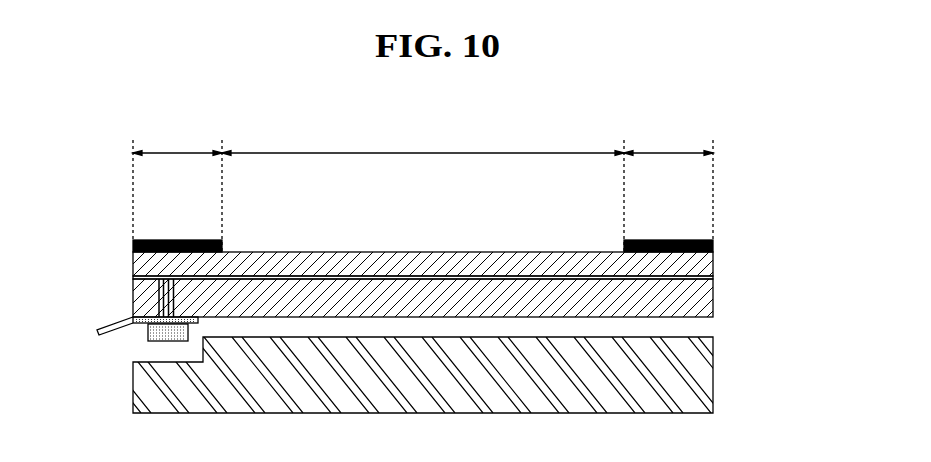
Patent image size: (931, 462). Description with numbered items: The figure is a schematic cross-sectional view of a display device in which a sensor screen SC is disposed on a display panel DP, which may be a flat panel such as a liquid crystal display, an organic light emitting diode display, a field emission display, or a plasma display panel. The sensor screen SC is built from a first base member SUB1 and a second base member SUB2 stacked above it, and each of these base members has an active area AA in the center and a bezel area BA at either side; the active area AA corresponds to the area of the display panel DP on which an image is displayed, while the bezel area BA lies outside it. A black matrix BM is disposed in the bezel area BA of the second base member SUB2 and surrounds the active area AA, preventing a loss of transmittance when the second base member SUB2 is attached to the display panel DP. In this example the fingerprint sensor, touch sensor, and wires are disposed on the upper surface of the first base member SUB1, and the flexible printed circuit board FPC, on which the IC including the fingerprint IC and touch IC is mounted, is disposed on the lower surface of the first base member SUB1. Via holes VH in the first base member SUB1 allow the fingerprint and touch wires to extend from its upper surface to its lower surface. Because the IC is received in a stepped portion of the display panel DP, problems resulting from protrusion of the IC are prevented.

The bezel area BA is at (423, 192).
The active area AA is at (423, 145).
The black matrix BM is at (178, 240).
The second base member SUB2 is at (713, 262).
The first base member SUB1 is at (713, 297).
The sensor screen SC is at (805, 258).
The via holes VH is at (133, 302).
The flexible printed circuit board FPC is at (97, 335).
The element IC is at (148, 334).
The display panel DP is at (713, 374).